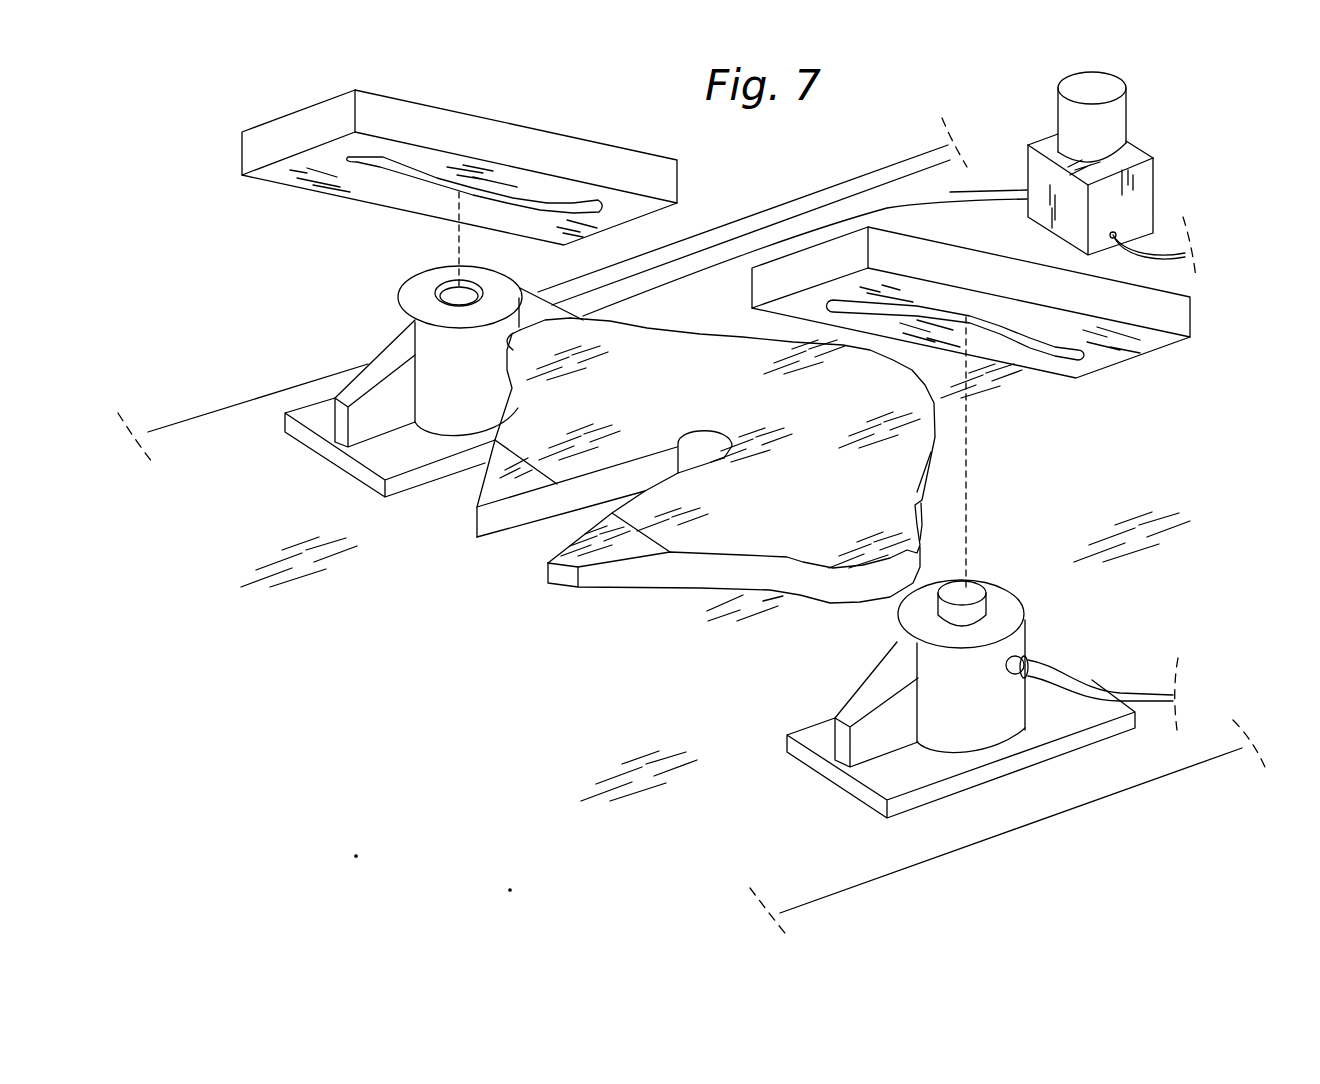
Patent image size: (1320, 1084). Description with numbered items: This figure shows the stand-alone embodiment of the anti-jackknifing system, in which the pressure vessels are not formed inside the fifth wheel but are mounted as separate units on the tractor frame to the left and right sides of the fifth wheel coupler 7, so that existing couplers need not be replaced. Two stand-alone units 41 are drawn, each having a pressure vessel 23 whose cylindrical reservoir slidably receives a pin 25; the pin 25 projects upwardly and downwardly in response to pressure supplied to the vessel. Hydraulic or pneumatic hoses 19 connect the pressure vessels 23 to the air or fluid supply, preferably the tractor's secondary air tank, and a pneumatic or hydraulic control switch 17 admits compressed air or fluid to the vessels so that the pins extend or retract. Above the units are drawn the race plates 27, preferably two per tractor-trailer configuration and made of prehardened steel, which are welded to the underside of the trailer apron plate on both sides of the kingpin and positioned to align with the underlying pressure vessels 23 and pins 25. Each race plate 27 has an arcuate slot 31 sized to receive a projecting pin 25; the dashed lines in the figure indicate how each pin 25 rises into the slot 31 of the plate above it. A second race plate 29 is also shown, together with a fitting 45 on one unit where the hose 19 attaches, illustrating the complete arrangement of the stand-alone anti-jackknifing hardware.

The fifth wheel coupler 7 is at (693, 533).
The control switch 17 is at (1132, 203).
The hoses 19 is at (950, 192).
The pressure vessel 23 is at (961, 666).
The pin 25 is at (437, 291).
The race plate 27 is at (1173, 312).
The die block 29 is at (413, 190).
The arcuate slot 31 is at (372, 165).
The stand-alone unit 41 is at (717, 542).
The hose fitting 45 is at (1048, 654).